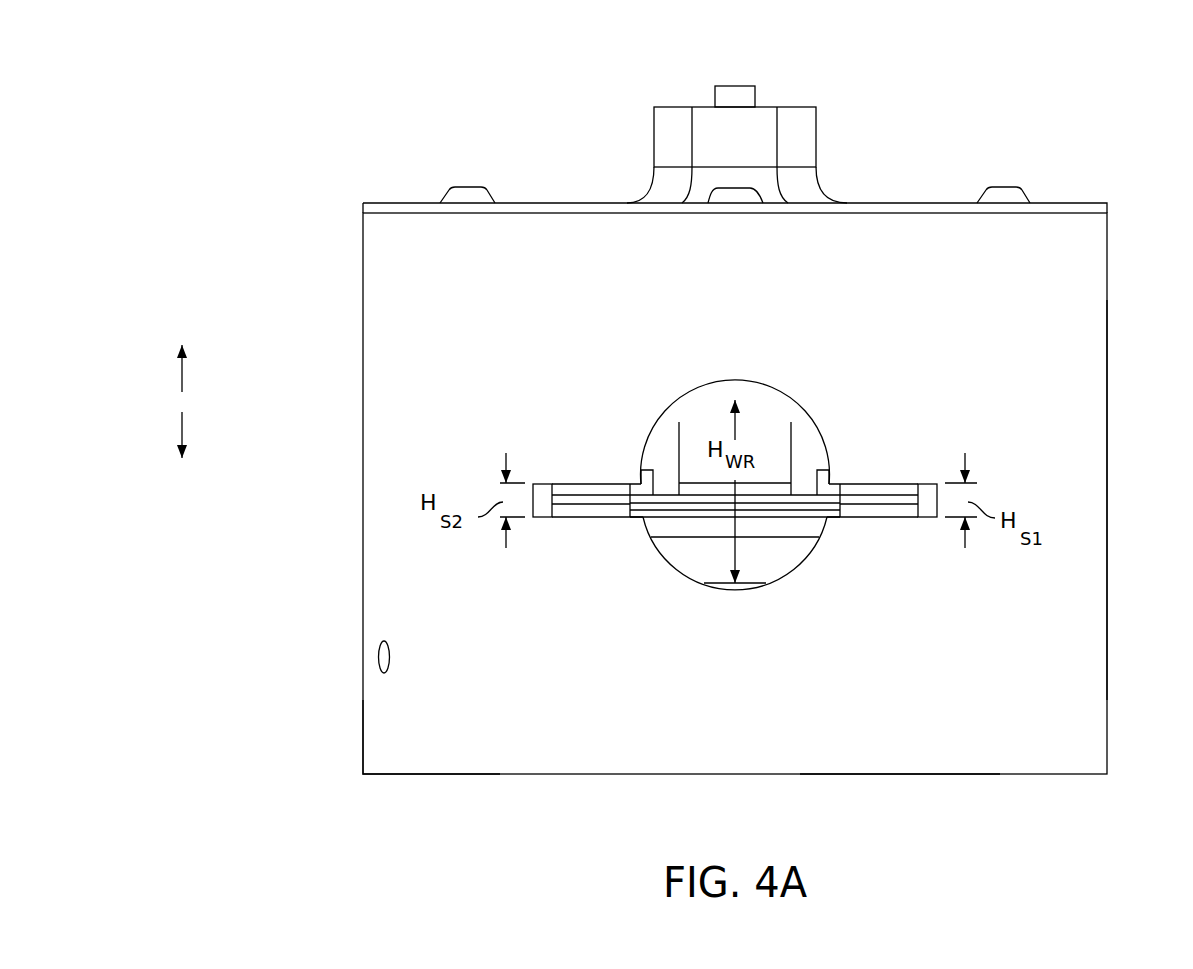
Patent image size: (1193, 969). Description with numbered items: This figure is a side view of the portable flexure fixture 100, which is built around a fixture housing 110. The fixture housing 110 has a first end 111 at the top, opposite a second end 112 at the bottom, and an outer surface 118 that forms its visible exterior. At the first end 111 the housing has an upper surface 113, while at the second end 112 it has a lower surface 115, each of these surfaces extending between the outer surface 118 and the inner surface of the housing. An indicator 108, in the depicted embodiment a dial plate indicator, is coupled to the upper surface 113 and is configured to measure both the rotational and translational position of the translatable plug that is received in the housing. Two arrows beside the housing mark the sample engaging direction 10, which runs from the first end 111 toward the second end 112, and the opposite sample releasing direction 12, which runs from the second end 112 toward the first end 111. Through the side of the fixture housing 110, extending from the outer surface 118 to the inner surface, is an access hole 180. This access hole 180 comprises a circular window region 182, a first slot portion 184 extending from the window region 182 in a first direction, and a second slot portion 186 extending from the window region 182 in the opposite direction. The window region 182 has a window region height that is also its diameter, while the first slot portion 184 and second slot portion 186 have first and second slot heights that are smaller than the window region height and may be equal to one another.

The portable flexure fixture 100 is at (1110, 65).
The fixture housing 110 is at (758, 438).
The first end 111 is at (790, 143).
The second end 112 is at (900, 826).
The upper surface 113 is at (400, 206).
The indicator 108 is at (366, 209).
The lower surface 115 is at (405, 776).
The outer surface 118 is at (1107, 462).
The sample engaging direction 10 is at (183, 428).
The sample releasing direction 12 is at (183, 378).
The access hole 180 is at (735, 521).
The window region 182 is at (807, 552).
The first slot portion 184 is at (895, 519).
The second slot portion 186 is at (573, 519).